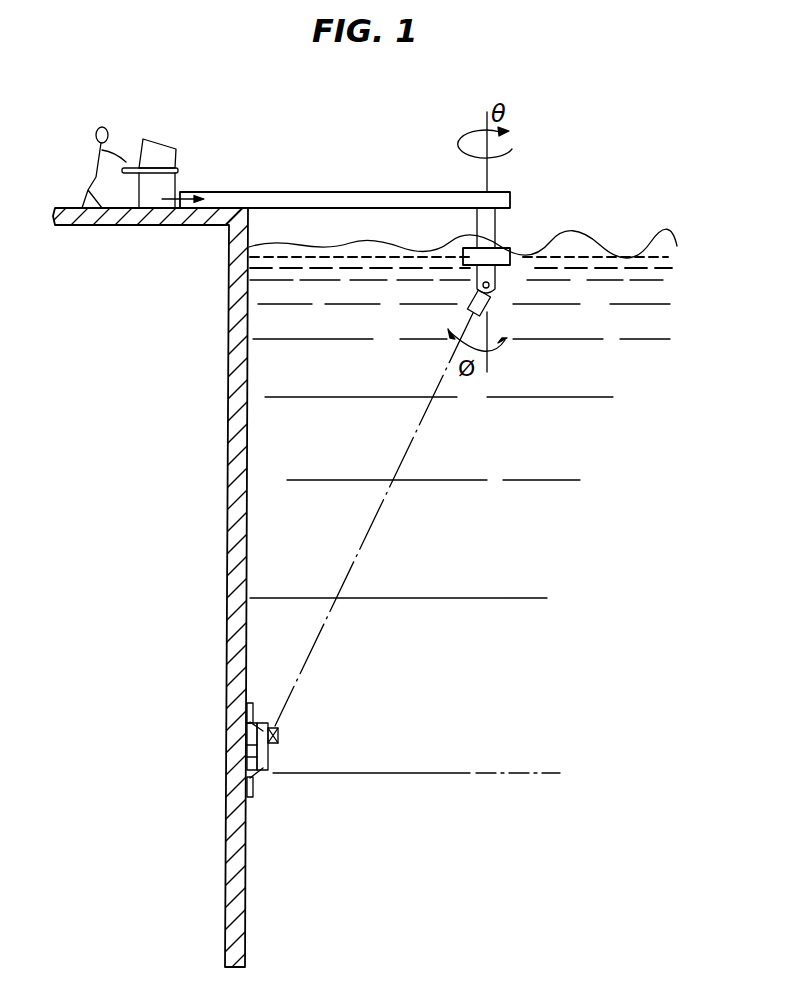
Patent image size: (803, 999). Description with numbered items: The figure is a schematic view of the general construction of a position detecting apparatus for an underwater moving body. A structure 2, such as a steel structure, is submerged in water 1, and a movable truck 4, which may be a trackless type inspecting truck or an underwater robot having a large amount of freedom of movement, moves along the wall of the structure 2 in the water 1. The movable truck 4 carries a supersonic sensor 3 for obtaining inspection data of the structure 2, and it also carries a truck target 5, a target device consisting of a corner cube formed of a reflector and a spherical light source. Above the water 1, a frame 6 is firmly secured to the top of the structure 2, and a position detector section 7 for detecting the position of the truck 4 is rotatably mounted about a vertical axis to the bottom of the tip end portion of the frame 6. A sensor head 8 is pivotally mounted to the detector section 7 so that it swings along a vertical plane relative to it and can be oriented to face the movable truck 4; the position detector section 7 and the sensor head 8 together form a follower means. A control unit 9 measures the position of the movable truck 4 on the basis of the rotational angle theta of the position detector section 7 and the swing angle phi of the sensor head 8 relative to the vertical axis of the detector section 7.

The water 1 is at (597, 243).
The structure 2 is at (247, 553).
The supersonic sensor 3 is at (248, 750).
The movable truck 4 is at (263, 757).
The truck target 5 is at (278, 738).
The frame 6 is at (310, 192).
The position detector section 7 is at (510, 262).
The sensor head 8 is at (486, 304).
The control unit 9 is at (167, 141).